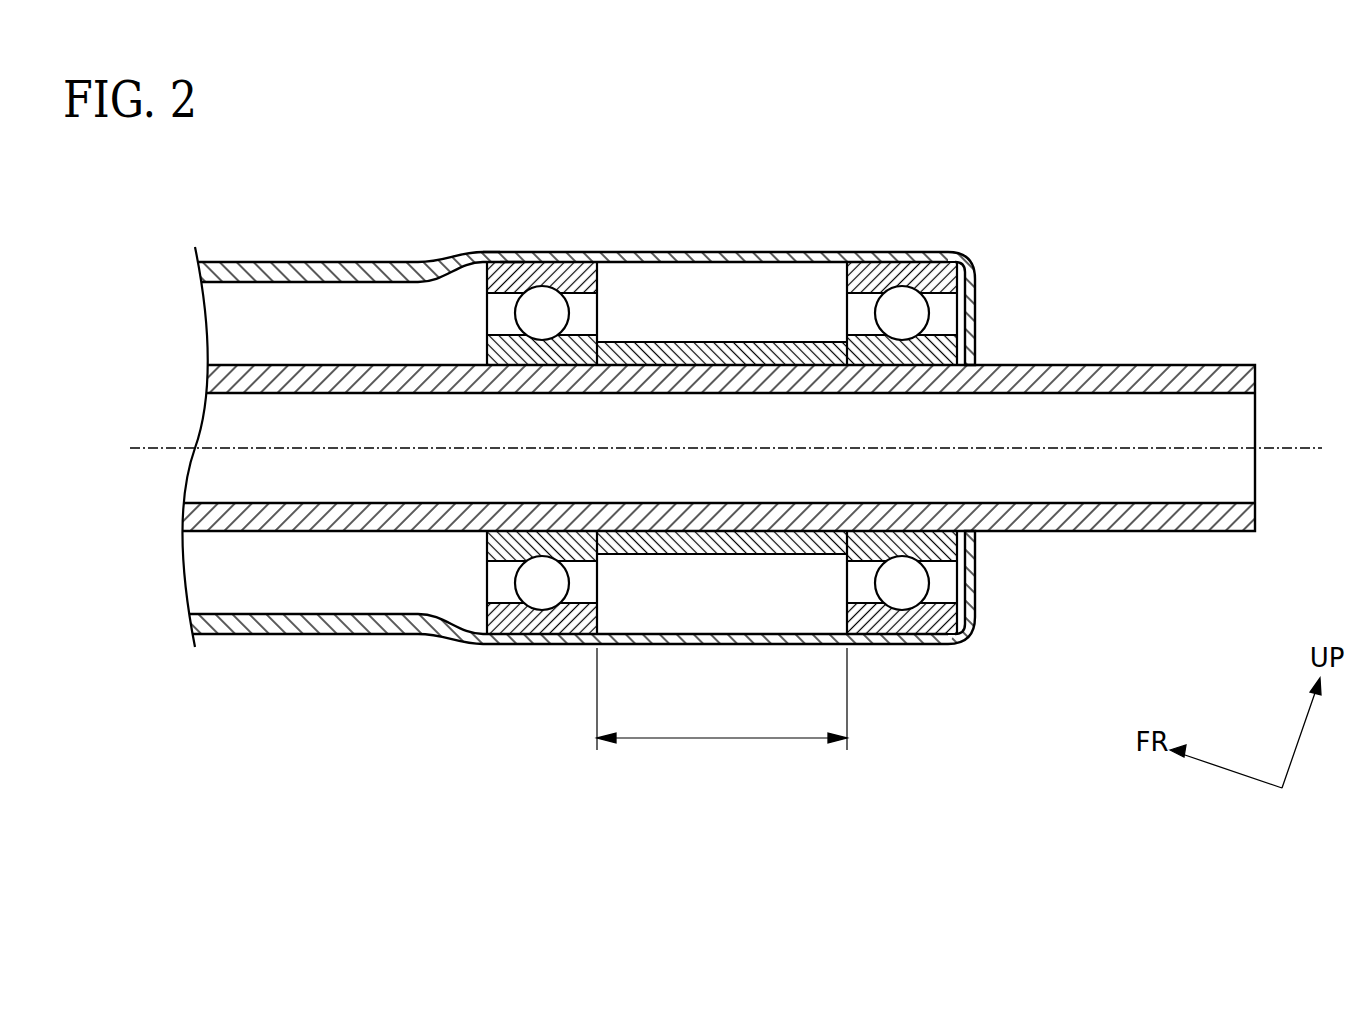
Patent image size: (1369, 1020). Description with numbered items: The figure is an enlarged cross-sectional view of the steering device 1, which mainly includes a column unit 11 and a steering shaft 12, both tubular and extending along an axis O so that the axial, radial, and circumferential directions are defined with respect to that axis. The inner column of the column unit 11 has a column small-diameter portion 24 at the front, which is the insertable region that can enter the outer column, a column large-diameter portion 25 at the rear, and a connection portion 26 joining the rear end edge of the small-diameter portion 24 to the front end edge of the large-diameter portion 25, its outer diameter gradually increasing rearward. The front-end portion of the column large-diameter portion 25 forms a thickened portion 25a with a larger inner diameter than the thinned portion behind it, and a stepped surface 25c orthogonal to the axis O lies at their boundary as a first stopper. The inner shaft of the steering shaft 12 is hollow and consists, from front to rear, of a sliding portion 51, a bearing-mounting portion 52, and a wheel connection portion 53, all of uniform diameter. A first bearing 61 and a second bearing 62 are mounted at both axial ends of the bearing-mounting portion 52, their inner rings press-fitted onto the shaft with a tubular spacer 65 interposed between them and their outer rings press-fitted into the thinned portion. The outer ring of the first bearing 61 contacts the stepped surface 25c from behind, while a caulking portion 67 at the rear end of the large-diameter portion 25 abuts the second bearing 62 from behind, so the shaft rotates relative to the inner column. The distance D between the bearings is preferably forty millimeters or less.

The steering device 1 is at (1117, 202).
The column unit 11 is at (939, 252).
The steering shaft 12 is at (256, 532).
The column small-diameter portion 24 is at (336, 261).
The column large-diameter portion 25 is at (628, 251).
The thickened portion 25a is at (478, 253).
The stepped surface 25c is at (510, 261).
The connection portion 26 is at (425, 257).
The sliding portion 51 is at (352, 506).
The bearing-mounting portion 52 is at (690, 517).
The wheel connection portion 53 is at (1110, 531).
The first bearing 61 is at (547, 636).
The second bearing 62 is at (905, 636).
The spacer 65 is at (770, 548).
The caulking portion 67 is at (977, 264).
The axis O is at (1285, 446).
The distance between the rear bearings D is at (722, 710).